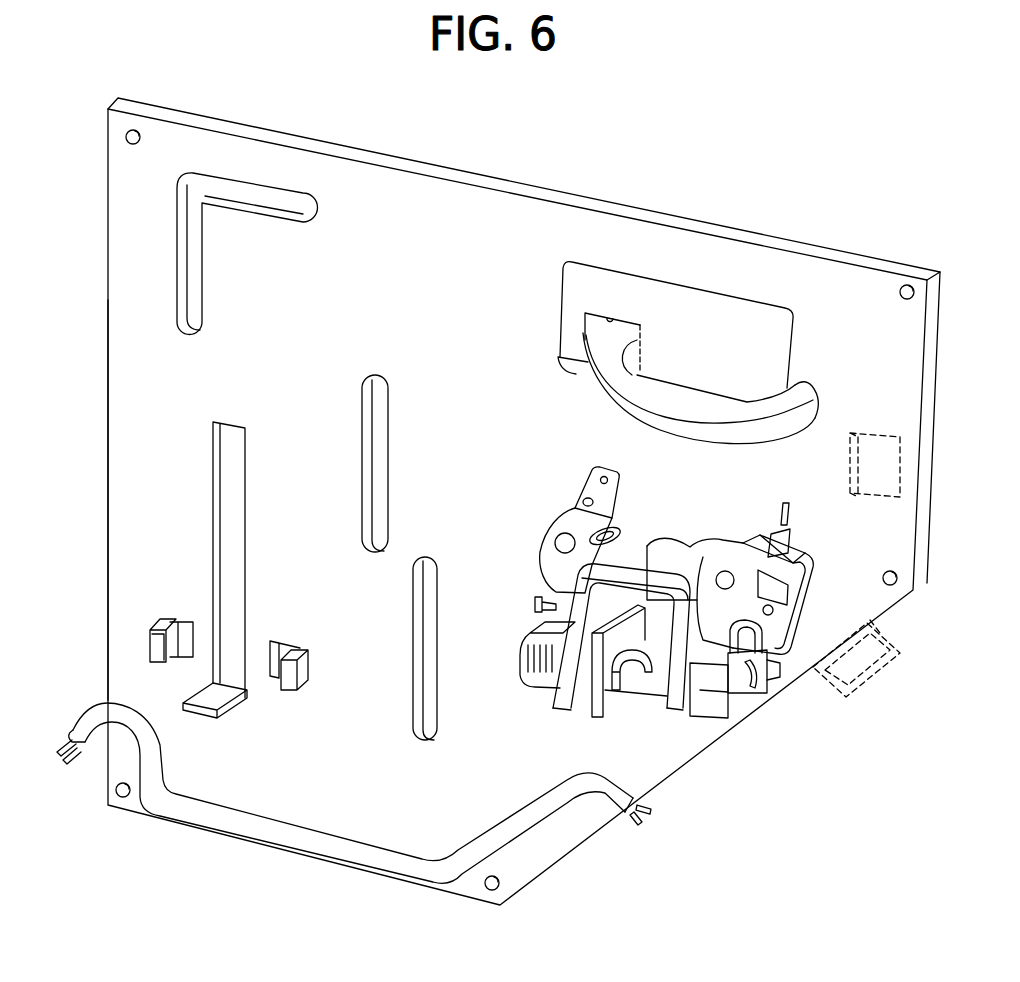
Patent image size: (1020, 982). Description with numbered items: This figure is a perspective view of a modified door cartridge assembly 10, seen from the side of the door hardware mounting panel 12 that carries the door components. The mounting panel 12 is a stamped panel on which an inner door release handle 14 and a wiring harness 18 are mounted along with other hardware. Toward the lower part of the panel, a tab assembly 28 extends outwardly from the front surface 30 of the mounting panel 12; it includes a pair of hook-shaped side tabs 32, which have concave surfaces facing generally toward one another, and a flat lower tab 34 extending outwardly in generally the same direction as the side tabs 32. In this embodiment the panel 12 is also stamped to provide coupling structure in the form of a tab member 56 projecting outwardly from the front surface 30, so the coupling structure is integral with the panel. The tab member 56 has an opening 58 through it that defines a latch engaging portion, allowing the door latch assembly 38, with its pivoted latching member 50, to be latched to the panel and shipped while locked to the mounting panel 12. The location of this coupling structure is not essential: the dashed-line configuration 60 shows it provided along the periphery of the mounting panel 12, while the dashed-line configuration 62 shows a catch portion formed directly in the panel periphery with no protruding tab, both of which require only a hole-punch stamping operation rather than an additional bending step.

The door cartridge assembly 10 is at (785, 211).
The door hardware mounting panel 12 is at (498, 197).
The inner door release handle 14 is at (621, 360).
The wiring harness 18 is at (165, 803).
The tab assembly 28 is at (148, 610).
The front surface 30 is at (110, 461).
The side tabs 32 is at (150, 640).
The lower tab 34 is at (220, 697).
The door latch assembly 38 is at (631, 571).
The pivoted latching member 50 is at (643, 670).
The tab member 56 is at (593, 705).
The opening 58 is at (620, 693).
The dashed-line configuration 60 is at (836, 686).
The dashed-line configuration 62 is at (899, 430).